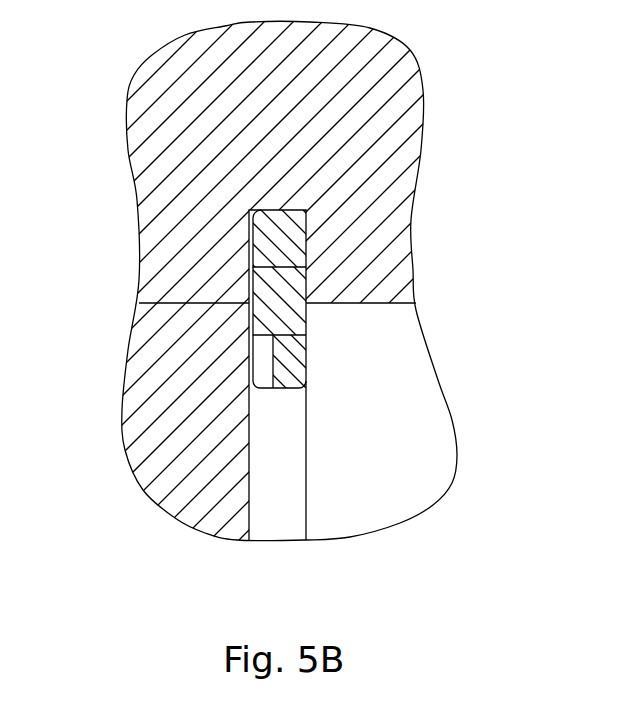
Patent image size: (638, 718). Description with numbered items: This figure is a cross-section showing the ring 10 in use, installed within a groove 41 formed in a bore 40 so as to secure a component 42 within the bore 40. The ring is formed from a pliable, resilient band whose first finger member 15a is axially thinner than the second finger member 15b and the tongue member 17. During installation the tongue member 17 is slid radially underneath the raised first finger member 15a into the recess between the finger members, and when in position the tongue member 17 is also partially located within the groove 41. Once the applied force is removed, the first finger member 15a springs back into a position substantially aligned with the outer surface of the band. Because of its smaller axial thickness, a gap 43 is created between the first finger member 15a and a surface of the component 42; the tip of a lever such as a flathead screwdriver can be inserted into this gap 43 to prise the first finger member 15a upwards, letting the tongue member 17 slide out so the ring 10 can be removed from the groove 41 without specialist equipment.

The bore 40 is at (160, 135).
The groove 41 is at (248, 213).
The component 42 is at (155, 495).
The tongue member 17 is at (273, 310).
The second finger member 15b is at (294, 236).
The ring 10 is at (298, 310).
The first finger member 15a is at (298, 358).
The gap 43 is at (260, 360).